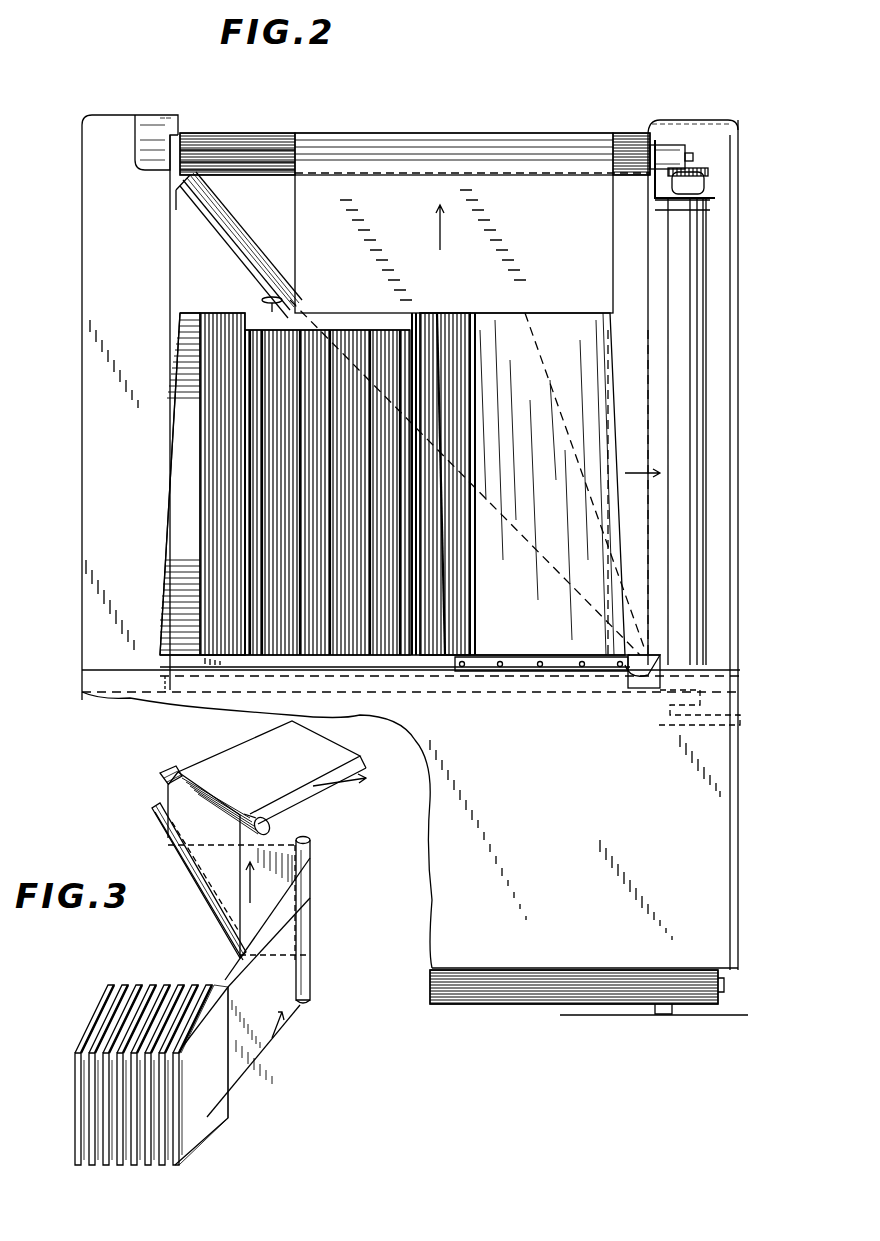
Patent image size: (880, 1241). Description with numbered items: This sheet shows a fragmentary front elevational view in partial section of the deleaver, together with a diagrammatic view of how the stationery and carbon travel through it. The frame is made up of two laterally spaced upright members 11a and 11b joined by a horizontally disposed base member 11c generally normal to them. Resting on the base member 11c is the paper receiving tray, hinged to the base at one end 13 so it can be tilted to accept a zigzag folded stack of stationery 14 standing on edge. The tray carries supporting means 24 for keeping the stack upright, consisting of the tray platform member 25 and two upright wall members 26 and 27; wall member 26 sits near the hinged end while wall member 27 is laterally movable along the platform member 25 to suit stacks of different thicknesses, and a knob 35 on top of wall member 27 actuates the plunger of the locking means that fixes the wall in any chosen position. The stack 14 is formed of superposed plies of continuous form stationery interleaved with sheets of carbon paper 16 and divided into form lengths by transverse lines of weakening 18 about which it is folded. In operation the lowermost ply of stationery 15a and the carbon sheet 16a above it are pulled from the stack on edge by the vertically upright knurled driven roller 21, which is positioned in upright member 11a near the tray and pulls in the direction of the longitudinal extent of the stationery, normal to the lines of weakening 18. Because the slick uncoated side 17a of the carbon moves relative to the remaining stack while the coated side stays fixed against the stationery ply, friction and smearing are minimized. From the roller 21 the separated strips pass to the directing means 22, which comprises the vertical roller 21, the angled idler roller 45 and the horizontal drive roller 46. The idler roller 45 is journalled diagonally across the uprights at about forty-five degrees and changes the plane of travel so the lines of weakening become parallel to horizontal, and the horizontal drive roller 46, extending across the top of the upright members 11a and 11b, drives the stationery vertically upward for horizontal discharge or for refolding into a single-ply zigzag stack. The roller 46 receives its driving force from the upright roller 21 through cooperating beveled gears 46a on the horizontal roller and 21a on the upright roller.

In FIG. 2, the upright member 11a is at (735, 408).
In FIG. 2, the upright member 11b is at (140, 346).
In FIG. 2, the base member 11c is at (622, 822).
In FIG. 2, the hinged end 13 is at (505, 675).
In FIG. 3, the zigzag folded stack of stationery 14 is at (118, 1051).
In FIG. 3, the lowermost ply of stationery 15a is at (282, 836).
In FIG. 3, the carbon paper 16 is at (195, 1112).
In FIG. 2, the carbon sheet 16a is at (318, 192).
In FIG. 3, the carbon sheet 16a is at (246, 752).
In FIG. 3, the slick uncoated side of the carbon 17a is at (280, 930).
In FIG. 2, the transverse lines of weakening 18 is at (262, 437).
In FIG. 3, the transverse lines of weakening 18 is at (160, 985).
In FIG. 2, the knurled driven roller 21 is at (698, 262).
In FIG. 3, the knurled driven roller 21 is at (312, 842).
In FIG. 2, the beveled gear 21a is at (705, 178).
In FIG. 2, the directing means 22 is at (218, 259).
In FIG. 3, the directing means 22 is at (152, 842).
In FIG. 2, the supporting means 24 is at (153, 494).
In FIG. 2, the tray platform member 25 is at (400, 660).
In FIG. 2, the upright wall member 26 is at (440, 539).
In FIG. 2, the upright wall member 27 is at (190, 382).
In FIG. 2, the knob 35 is at (262, 298).
In FIG. 2, the idler roller 45 is at (255, 258).
In FIG. 3, the idler roller 45 is at (152, 812).
In FIG. 2, the horizontal drive roller 46 is at (235, 148).
In FIG. 3, the horizontal drive roller 46 is at (172, 772).
In FIG. 2, the beveled gear 46a is at (672, 148).